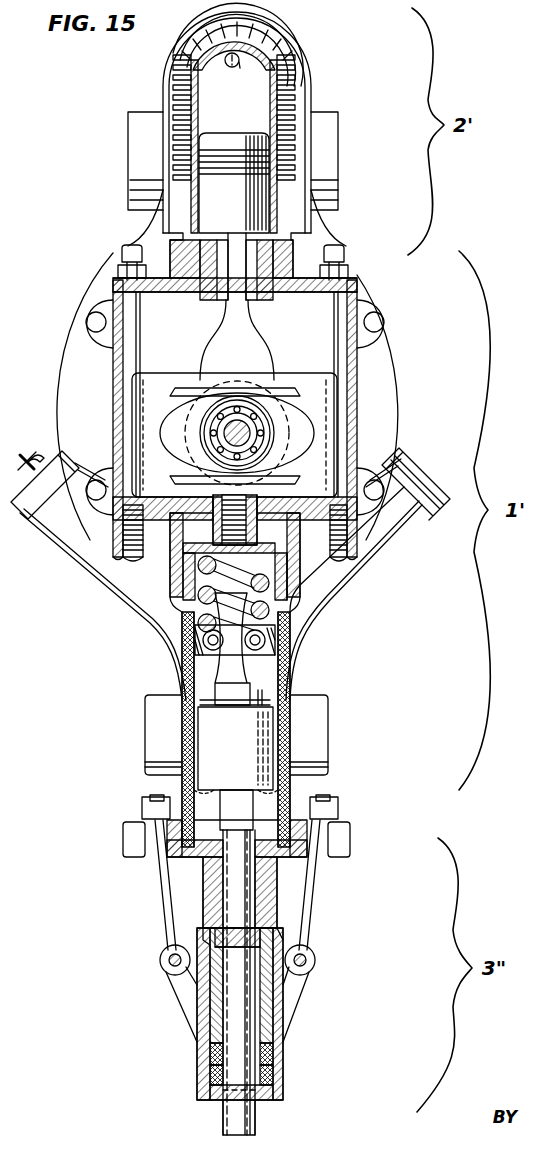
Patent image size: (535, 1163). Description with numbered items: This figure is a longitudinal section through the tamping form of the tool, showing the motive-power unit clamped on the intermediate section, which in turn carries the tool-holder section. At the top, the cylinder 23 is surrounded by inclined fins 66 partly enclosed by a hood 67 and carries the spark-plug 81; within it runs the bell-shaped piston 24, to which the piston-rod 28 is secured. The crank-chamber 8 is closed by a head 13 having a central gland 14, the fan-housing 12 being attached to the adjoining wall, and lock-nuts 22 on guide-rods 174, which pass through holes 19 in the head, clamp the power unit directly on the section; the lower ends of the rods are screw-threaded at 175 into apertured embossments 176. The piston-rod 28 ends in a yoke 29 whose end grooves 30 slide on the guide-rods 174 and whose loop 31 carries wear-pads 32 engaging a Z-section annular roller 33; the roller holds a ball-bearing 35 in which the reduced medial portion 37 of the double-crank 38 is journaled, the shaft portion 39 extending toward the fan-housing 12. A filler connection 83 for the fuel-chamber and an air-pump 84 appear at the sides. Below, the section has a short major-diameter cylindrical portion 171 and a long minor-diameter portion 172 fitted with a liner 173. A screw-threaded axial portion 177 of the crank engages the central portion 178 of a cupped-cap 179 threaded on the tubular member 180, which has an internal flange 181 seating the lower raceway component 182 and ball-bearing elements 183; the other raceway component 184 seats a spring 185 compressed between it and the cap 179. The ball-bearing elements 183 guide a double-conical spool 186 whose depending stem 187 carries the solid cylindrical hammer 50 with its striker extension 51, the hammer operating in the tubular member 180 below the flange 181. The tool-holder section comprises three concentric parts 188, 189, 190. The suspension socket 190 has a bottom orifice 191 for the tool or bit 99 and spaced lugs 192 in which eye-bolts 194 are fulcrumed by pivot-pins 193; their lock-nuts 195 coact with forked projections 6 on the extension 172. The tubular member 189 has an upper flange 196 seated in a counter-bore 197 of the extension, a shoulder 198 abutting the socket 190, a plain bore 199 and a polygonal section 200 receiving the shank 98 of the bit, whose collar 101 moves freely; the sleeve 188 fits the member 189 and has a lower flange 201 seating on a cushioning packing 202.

The hood 67 is at (306, 82).
The inclined fins 66 is at (292, 122).
The spark-plug 81 is at (232, 72).
The cylinder 23 is at (198, 107).
The bell-shaped piston 24 is at (234, 216).
The piston-rod 28 is at (278, 238).
The gland 14 is at (204, 277).
The head 13 is at (279, 275).
The hole 19 is at (370, 274).
The lock-nuts 22 is at (124, 250).
The guide-rods 174 is at (128, 290).
The crank-chamber 8 is at (356, 368).
The fan-housing 12 is at (227, 396).
The yoke 29 is at (330, 421).
The end grooves 30 is at (160, 406).
The wear-pads 32 is at (200, 380).
The loop 31 is at (301, 452).
The double-crank 38 is at (253, 340).
The shaft portion 39 is at (266, 370).
The Z-section annular roller 33 is at (210, 452).
The ball-bearing 35 is at (252, 436).
The reduced medial portion 37 is at (224, 436).
The air-pump 84 is at (50, 468).
The filler connection 83 is at (405, 503).
The screw-threaded lower ends 175 is at (128, 528).
The apertured embossments 176 is at (120, 540).
The screw-threaded axial portion 177 is at (218, 532).
The central portion 178 is at (250, 534).
The major-diameter cylindrical portion 171 is at (176, 562).
The cupped-cap 179 is at (299, 557).
The minor-diameter portion 172 is at (185, 651).
The spring 185 is at (195, 576).
The raceway component 184 is at (200, 604).
The ball-bearing elements 183 is at (203, 641).
The lower raceway component 182 is at (266, 646).
The internal flange 181 is at (200, 673).
The tubular member 180 is at (268, 670).
The double-conical spool 186 is at (252, 682).
The depending stem 187 is at (264, 701).
The hammer 50 is at (235, 748).
The striker extension 51 is at (236, 810).
The liner 173 is at (186, 795).
The lock-nuts 195 is at (142, 808).
The forked projections 6 is at (125, 833).
The counter-bore 197 is at (168, 858).
The upper flange 196 is at (320, 860).
The shank 98 is at (242, 848).
The polygonal section 200 is at (213, 890).
The tubular member 189 is at (274, 908).
The eye-bolts 194 is at (160, 891).
The collar 101 is at (236, 930).
The shoulder 198 is at (262, 938).
The plain bore 199 is at (215, 932).
The pivot-pins 193 is at (160, 958).
The spaced lugs 192 is at (176, 1010).
The suspension socket 190 is at (200, 1013).
The tubular part 188 is at (270, 1014).
The lower flange 201 is at (274, 1051).
The cushioning-gasket 202 is at (274, 1073).
The tool or bit 99 is at (223, 1114).
The orifice 191 is at (262, 1098).